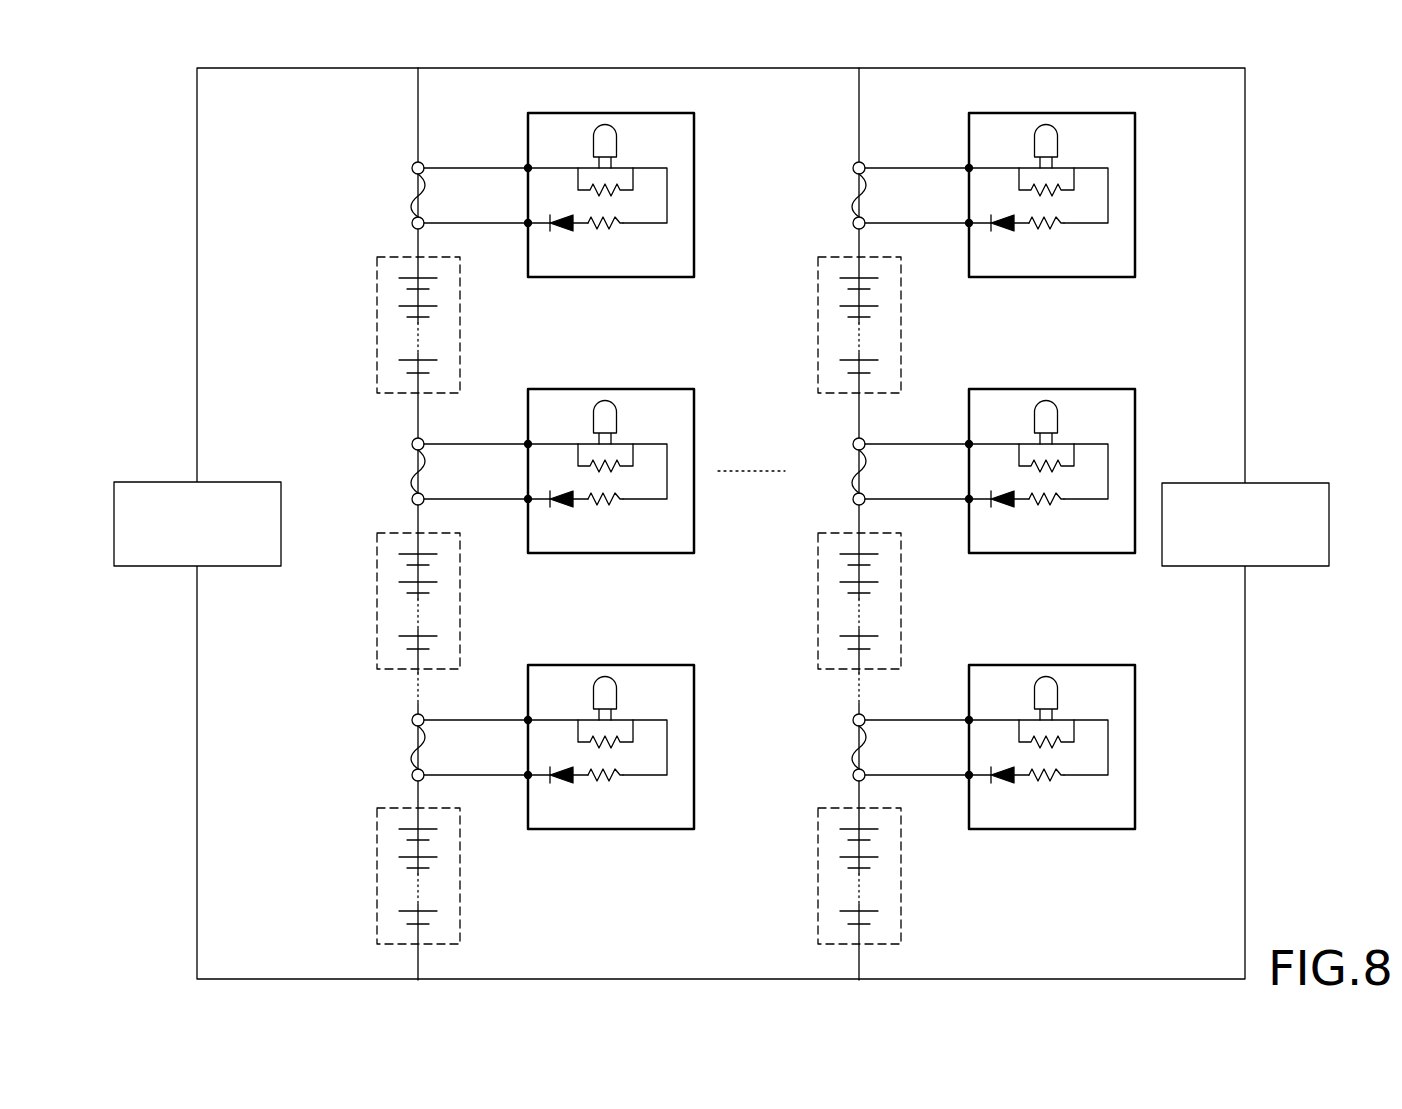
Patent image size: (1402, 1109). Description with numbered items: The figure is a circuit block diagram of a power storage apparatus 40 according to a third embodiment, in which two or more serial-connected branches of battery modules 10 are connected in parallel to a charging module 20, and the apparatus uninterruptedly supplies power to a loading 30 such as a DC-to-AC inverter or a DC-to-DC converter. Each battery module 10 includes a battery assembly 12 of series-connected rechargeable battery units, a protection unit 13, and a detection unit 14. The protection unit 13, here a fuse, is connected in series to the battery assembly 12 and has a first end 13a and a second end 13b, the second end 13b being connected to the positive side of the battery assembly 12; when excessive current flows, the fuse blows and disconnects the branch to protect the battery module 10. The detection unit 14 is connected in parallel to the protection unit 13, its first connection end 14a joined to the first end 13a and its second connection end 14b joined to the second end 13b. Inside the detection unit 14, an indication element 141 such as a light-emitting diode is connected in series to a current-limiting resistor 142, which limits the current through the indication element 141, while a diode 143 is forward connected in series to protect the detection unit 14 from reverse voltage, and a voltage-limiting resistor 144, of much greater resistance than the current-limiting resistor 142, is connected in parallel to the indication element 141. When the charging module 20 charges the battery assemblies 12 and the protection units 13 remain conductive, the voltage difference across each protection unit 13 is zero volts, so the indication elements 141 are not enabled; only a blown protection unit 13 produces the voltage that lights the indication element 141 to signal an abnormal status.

The power storage apparatus 40 is at (183, 140).
The loading 30 is at (186, 490).
The charging module 20 is at (1255, 488).
The battery module 10 is at (758, 485).
The battery assembly 12 is at (825, 326).
The protection unit 13 is at (895, 195).
The first end 13a is at (899, 154).
The second end 13b is at (899, 238).
The detection unit 14 is at (1052, 177).
The first connection end 14a is at (951, 132).
The second connection end 14b is at (951, 262).
The indication element 141 is at (1086, 147).
The current-limiting resistor 142 is at (1079, 241).
The diode 143 is at (1021, 247).
The voltage-limiting resistor 144 is at (1026, 185).